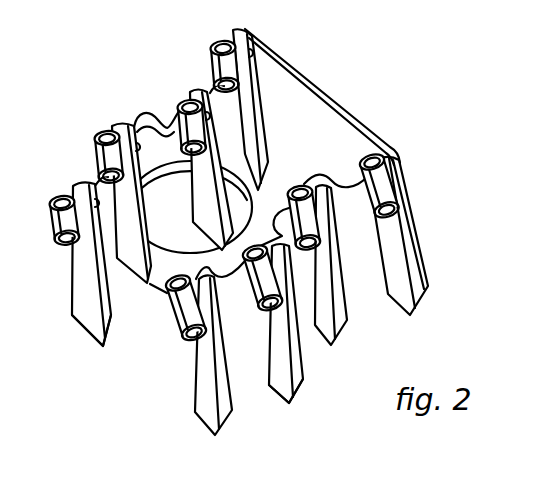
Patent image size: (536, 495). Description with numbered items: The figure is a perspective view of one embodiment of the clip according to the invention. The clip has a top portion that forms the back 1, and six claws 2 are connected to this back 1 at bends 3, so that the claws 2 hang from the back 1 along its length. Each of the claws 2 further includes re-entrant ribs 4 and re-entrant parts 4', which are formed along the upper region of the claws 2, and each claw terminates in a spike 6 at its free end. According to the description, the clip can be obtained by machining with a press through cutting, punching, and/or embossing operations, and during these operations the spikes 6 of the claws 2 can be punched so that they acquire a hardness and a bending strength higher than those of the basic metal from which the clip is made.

The back 1 is at (335, 107).
The claws 2 is at (220, 109).
The bends 3 is at (244, 31).
The re-entrant ribs 4 is at (208, 47).
The re-entrant parts 4' is at (418, 180).
The spikes 6 is at (95, 325).